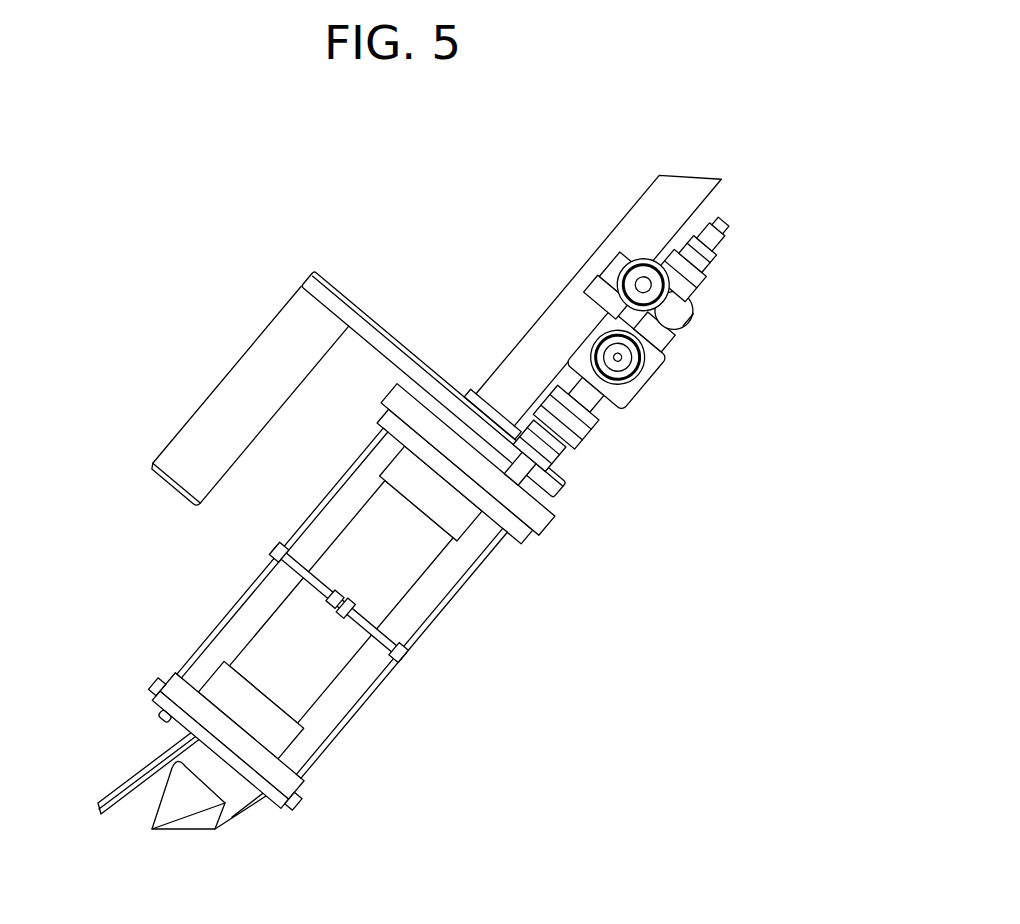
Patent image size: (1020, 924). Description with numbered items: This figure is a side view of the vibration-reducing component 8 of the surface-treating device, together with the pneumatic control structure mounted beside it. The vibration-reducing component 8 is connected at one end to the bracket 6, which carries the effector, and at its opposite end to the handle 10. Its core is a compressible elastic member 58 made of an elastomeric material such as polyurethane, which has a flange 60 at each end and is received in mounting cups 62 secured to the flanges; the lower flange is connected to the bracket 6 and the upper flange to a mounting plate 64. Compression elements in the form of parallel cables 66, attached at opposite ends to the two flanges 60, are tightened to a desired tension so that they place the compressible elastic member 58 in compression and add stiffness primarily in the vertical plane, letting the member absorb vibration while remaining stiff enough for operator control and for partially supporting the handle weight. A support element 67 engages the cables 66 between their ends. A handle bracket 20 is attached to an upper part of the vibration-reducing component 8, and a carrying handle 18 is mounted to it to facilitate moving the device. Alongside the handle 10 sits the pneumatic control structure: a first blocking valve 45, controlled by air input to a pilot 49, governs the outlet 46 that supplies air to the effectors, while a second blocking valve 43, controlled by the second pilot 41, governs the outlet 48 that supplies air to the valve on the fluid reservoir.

The bracket 6 is at (242, 797).
The vibration-reducing component 8 is at (552, 693).
The handle 10 is at (556, 312).
The carrying handle 18 is at (253, 362).
The handle bracket 20 is at (350, 300).
The second pilot 41 is at (718, 260).
The second blocking valve 43 is at (695, 318).
The first blocking valve 45 is at (607, 420).
The outlet 46 is at (578, 446).
The outlet 48 is at (600, 285).
The pilot 49 is at (640, 385).
The compressible elastic member 58 is at (325, 680).
The flange 60 is at (390, 421).
The mounting cups 62 is at (397, 472).
The mounting plate 64 is at (537, 515).
The cables 66 is at (303, 532).
The support element 67 is at (400, 655).